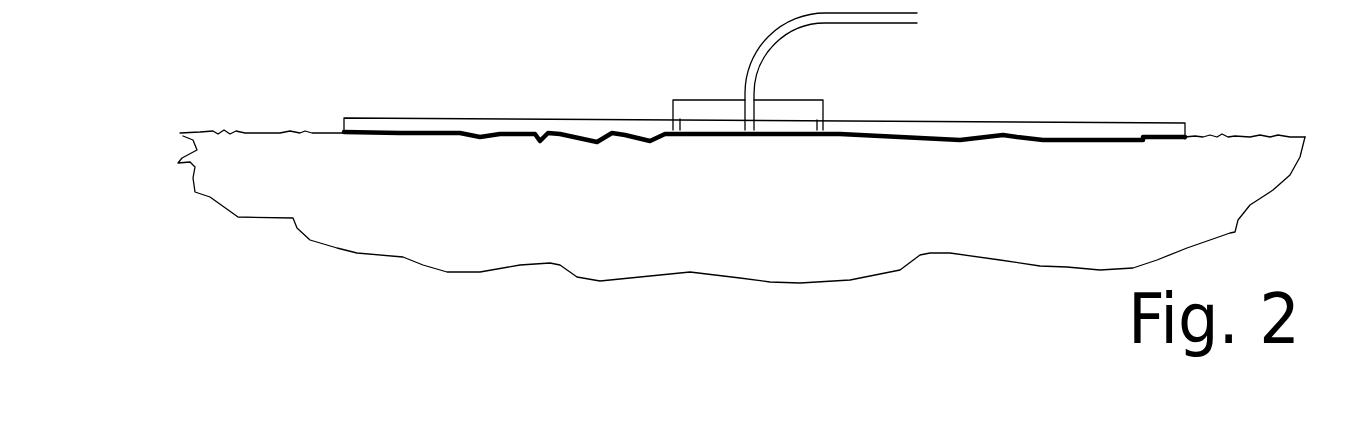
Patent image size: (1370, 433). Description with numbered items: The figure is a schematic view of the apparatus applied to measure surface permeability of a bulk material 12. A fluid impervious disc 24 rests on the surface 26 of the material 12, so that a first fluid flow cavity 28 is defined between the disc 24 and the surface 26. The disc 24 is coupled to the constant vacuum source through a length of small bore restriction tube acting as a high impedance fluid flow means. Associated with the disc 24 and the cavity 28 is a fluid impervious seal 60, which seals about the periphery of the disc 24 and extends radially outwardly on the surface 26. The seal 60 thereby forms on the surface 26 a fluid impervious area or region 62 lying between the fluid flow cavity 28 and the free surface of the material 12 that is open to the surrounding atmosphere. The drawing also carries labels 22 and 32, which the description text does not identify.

The material 12 is at (944, 242).
The adhesive layer 22 is at (542, 134).
The fluid impervious disc 24 is at (702, 105).
The surface 26 is at (290, 125).
The first fluid flow cavity 28 is at (726, 128).
The tube 32 is at (877, 22).
The fluid impervious seal 60 is at (465, 120).
The fluid impervious area or region 62 is at (640, 143).